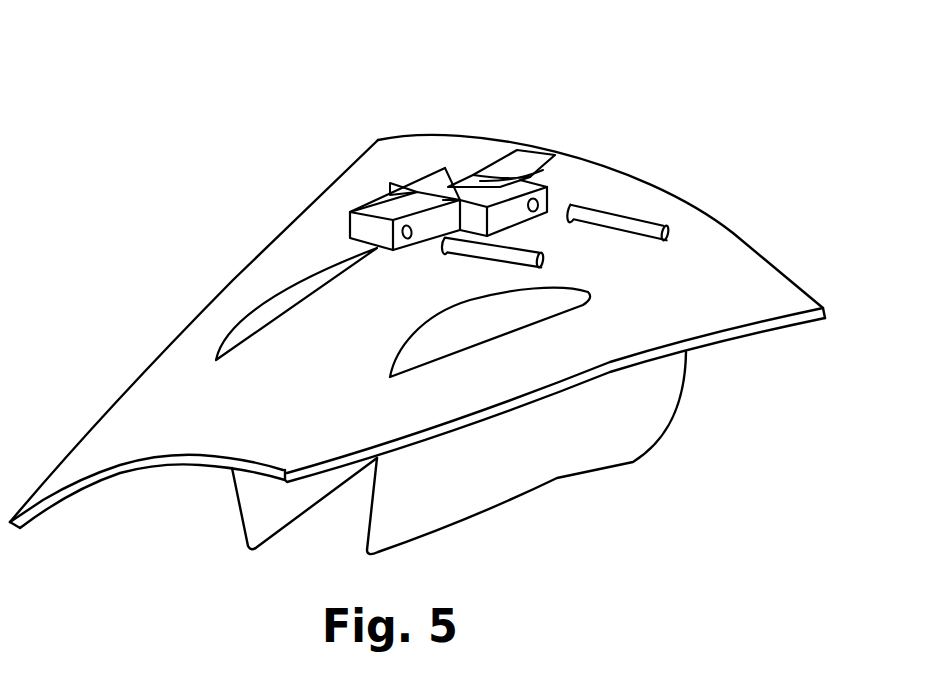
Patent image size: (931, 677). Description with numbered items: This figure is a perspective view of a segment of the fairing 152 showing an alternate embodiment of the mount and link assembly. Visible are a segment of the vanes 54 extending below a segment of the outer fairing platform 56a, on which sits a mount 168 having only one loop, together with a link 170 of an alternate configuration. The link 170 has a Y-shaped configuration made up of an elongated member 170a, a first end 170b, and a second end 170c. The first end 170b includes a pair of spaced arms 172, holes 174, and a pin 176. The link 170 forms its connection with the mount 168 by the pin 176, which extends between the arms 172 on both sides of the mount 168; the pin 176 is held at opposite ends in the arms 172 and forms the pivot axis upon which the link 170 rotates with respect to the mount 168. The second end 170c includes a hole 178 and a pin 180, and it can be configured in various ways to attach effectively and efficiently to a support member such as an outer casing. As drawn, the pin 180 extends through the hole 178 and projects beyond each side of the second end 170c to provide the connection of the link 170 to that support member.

The fairing 152 is at (143, 177).
The vanes 54 is at (257, 502).
The outer fairing platform 56a is at (725, 245).
The mount 168 is at (513, 160).
The link 170 is at (372, 192).
The elongated member 170a is at (422, 200).
The first end 170b is at (537, 232).
The second end 170c is at (343, 220).
The spaced arms 172 is at (448, 175).
The holes 174 is at (545, 203).
The pin 176 is at (645, 218).
The hole 178 is at (410, 245).
The pin 180 is at (510, 263).